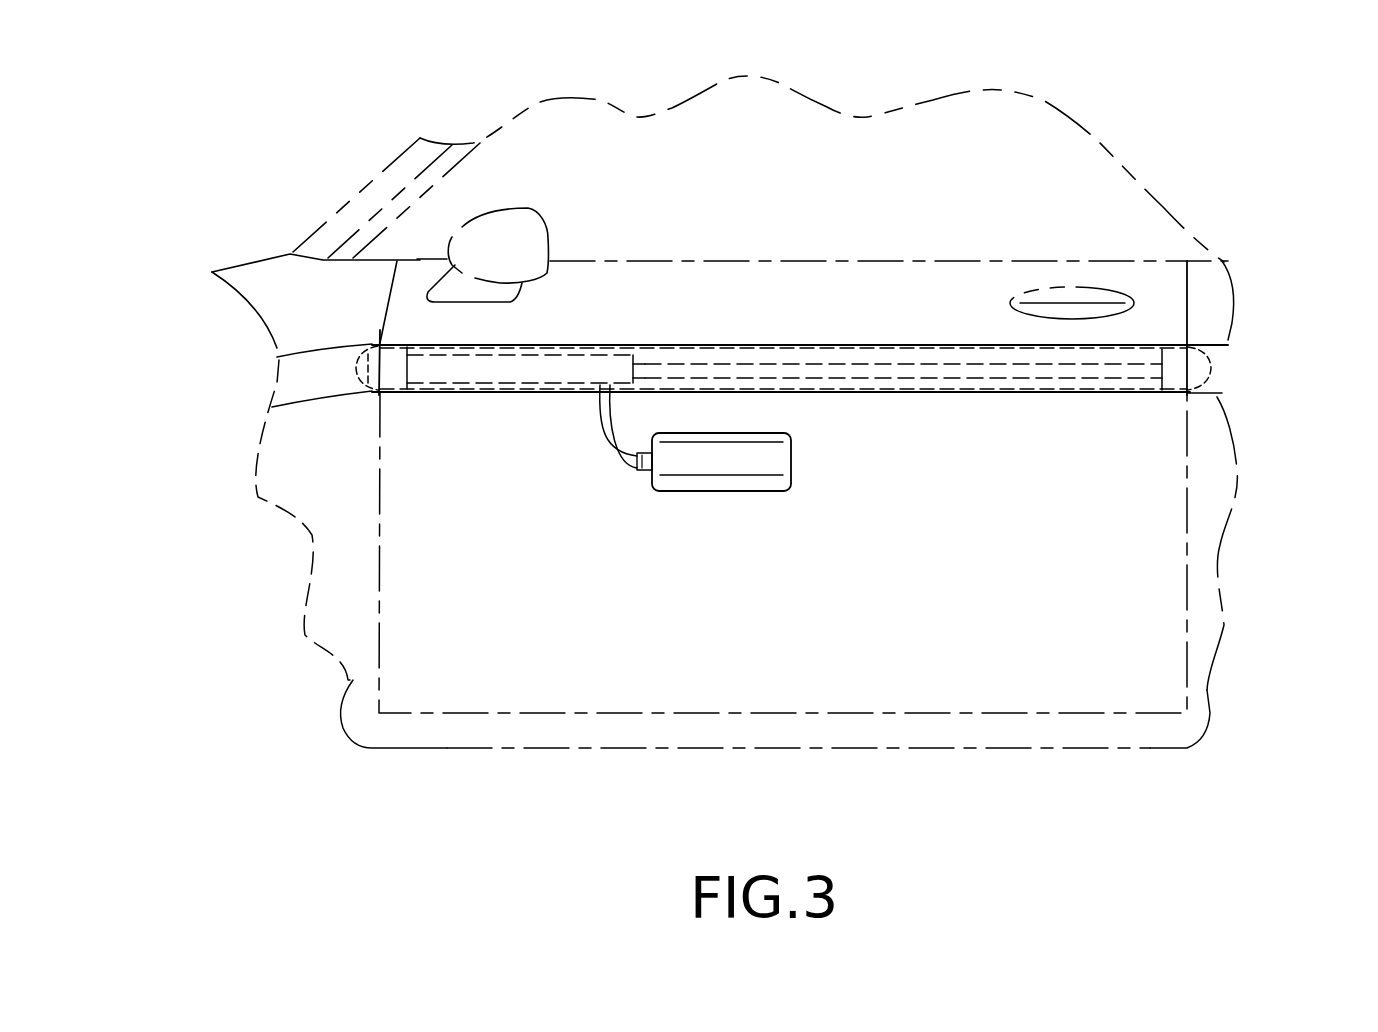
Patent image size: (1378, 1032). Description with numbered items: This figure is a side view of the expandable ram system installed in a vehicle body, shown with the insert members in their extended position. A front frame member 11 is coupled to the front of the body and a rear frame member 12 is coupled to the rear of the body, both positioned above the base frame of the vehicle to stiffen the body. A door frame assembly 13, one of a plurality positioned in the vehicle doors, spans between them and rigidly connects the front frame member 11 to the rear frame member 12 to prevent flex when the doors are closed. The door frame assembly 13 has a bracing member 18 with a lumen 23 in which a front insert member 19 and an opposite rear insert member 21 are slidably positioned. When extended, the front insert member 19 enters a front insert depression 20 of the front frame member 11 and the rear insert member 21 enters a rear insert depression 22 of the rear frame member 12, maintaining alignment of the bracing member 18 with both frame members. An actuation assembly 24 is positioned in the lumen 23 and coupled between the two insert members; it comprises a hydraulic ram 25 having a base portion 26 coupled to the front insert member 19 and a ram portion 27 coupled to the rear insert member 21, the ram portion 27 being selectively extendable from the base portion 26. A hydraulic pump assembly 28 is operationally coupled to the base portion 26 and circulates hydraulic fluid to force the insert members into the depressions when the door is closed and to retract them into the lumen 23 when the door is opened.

The front frame member 11 is at (309, 347).
The rear frame member 12 is at (1213, 345).
The door frame assembly 13 is at (1022, 617).
The bracing member 18 is at (950, 261).
The front insert member 19 is at (370, 372).
The front insert depression 20 is at (355, 366).
The rear insert member 21 is at (1217, 380).
The rear insert depression 22 is at (1215, 374).
The lumen 23 is at (968, 347).
The actuation assembly 24 is at (572, 396).
The hydraulic ram 25 is at (643, 360).
The base portion 26 is at (487, 372).
The ram portion 27 is at (820, 360).
The hydraulic pump assembly 28 is at (730, 468).